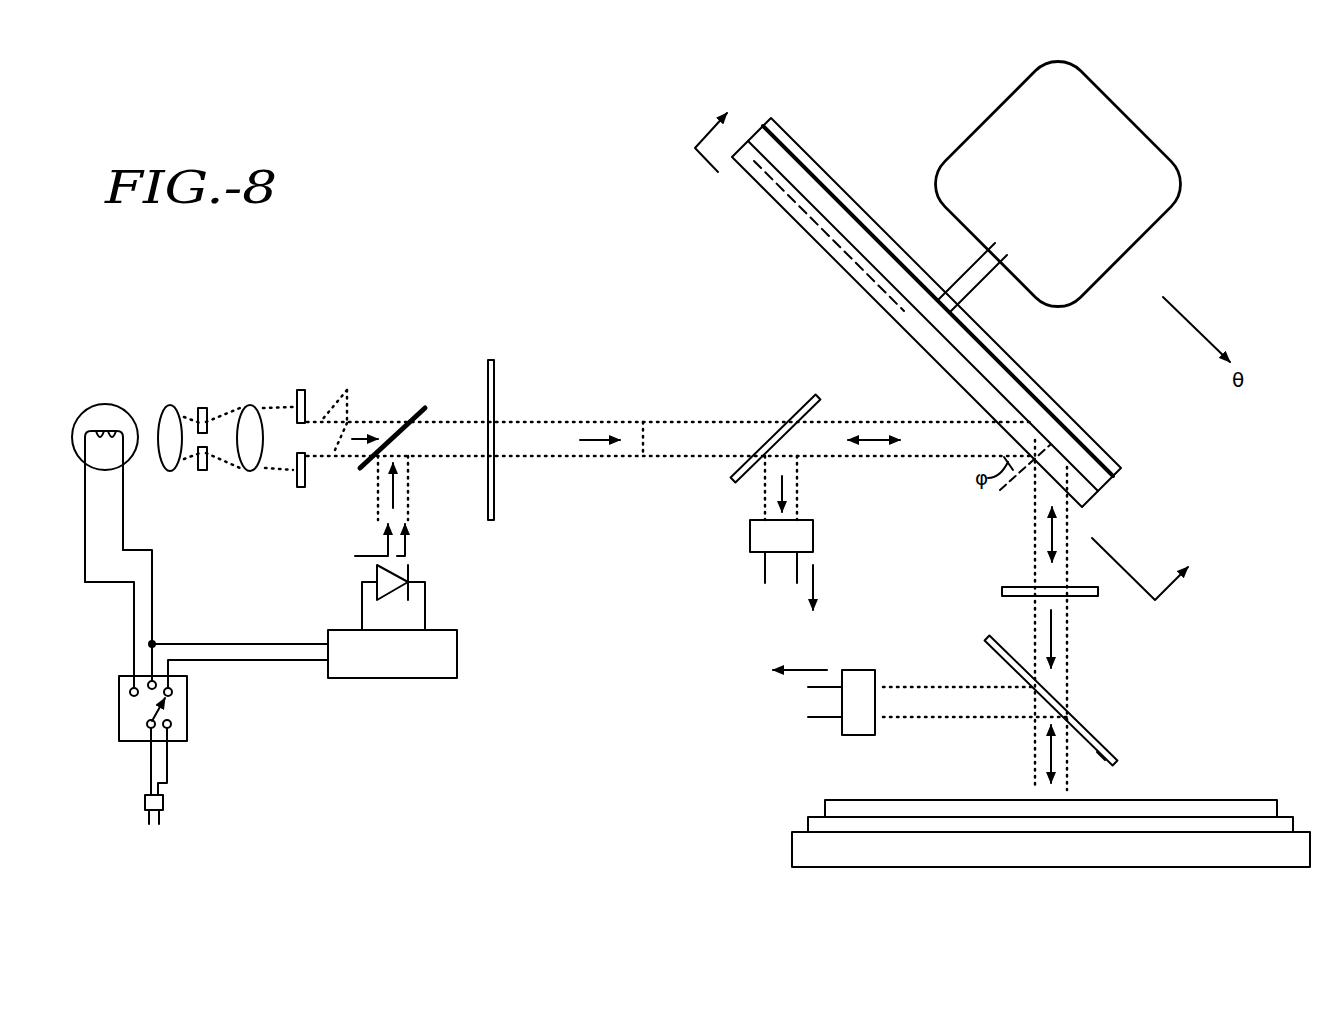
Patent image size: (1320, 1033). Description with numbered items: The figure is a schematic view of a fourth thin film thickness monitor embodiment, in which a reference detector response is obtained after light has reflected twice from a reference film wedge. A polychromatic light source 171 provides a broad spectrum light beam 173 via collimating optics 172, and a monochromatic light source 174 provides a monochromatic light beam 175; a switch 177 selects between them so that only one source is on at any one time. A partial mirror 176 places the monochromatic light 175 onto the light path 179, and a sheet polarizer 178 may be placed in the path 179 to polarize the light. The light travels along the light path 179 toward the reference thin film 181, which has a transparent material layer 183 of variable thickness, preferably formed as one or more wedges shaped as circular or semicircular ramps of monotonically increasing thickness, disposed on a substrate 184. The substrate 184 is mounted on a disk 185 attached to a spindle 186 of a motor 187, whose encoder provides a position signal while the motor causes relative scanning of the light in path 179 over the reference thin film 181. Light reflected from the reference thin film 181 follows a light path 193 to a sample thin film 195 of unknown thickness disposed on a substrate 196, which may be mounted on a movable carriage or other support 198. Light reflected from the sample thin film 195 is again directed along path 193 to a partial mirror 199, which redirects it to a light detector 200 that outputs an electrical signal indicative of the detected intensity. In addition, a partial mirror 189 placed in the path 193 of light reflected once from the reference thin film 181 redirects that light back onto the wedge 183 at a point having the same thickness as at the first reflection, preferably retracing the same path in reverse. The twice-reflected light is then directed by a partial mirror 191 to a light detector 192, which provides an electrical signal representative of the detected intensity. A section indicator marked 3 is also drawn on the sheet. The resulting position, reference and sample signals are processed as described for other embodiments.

The polychromatic light source 171 is at (99, 417).
The collimating optics 172 is at (313, 487).
The broad spectrum light beam 173 is at (347, 407).
The monochromatic light source 174 is at (435, 522).
The monochromatic light beam 175 is at (387, 556).
The partial mirror 176 is at (415, 407).
The switch 177 is at (176, 708).
The sheet polarizer 178 is at (494, 398).
The light path 179 is at (667, 457).
The reference thin film 181 is at (960, 341).
The transparent material layer 183 is at (1087, 495).
The substrate 184 is at (1103, 483).
The disk 185 is at (1107, 458).
The spindle 186 is at (960, 288).
The motor 187 is at (1100, 258).
The partial mirror 189 is at (1078, 595).
The partial mirror 191 is at (808, 405).
The light detector 192 is at (813, 538).
The light path 193 is at (1035, 775).
The sample thin film 195 is at (853, 800).
The substrate 196 is at (808, 824).
The movable carriage or other support 198 is at (792, 850).
The partial mirror 199 is at (1097, 752).
The light detector 200 is at (858, 670).
The section line 3 is at (949, 344).